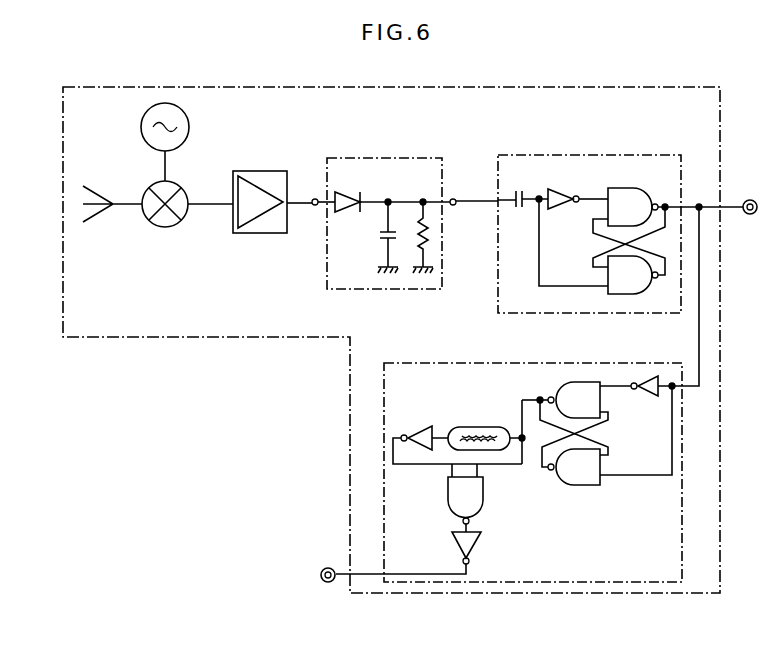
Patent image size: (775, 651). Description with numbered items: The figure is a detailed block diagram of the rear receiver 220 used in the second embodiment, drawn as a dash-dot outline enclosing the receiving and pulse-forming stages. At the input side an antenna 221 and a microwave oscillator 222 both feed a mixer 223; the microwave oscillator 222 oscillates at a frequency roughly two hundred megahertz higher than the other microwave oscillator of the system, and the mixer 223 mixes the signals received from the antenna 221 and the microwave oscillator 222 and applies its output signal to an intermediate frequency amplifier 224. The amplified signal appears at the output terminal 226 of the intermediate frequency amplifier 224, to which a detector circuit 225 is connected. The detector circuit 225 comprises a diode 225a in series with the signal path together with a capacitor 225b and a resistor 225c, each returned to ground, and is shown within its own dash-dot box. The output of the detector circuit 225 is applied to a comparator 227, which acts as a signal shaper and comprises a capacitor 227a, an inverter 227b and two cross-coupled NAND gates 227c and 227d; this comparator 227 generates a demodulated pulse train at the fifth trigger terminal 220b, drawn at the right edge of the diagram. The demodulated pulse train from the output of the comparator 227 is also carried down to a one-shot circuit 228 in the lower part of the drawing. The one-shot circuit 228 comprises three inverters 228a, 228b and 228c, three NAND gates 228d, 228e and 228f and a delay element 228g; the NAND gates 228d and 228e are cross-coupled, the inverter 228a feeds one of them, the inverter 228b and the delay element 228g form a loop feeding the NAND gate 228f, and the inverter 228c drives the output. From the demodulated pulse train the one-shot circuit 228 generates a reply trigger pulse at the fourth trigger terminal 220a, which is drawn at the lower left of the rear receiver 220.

The rear receiver 220 is at (158, 338).
The fourth trigger terminal 220a is at (330, 568).
The fifth trigger terminal 220b is at (750, 200).
The antenna 221 is at (105, 194).
The microwave oscillator 222 is at (187, 118).
The mixer 223 is at (184, 215).
The intermediate frequency amplifier 224 is at (264, 233).
The detector circuit 225 is at (383, 158).
The diode 225a is at (349, 192).
The capacitor 225b is at (382, 234).
The resistor 225c is at (434, 228).
The output terminal 226 is at (314, 206).
The comparator 227 is at (583, 155).
The capacitor 227a is at (519, 191).
The inverter 227b is at (566, 189).
The NAND gate 227c is at (641, 188).
The NAND gate 227d is at (645, 294).
The one-shot circuit 228 is at (683, 488).
The inverter 228a is at (645, 375).
The inverter 228b is at (421, 428).
The inverter 228c is at (477, 538).
The NAND gate 228d is at (566, 485).
The NAND gate 228e is at (586, 379).
The NAND gate 228f is at (485, 490).
The delay element 228g is at (481, 427).